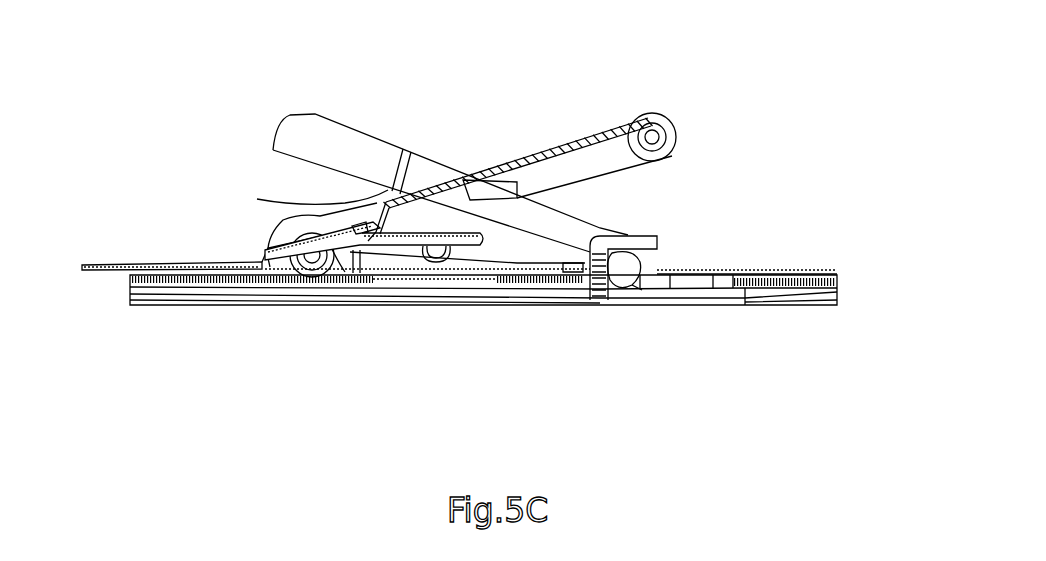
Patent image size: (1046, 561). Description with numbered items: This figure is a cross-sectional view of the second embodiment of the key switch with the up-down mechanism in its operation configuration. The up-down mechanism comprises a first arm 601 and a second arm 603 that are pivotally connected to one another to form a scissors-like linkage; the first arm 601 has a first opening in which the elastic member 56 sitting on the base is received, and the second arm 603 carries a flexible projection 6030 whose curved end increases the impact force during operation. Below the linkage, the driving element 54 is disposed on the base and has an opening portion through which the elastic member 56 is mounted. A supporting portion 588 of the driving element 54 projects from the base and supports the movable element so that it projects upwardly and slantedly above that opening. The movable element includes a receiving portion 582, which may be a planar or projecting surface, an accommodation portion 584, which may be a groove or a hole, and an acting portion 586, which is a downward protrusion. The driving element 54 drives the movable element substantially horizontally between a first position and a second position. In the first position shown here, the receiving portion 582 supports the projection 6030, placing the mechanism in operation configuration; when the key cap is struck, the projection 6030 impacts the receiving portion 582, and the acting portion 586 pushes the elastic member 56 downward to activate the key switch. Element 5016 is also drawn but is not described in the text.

The first arm 601 is at (327, 162).
The second arm 603 is at (607, 158).
The projection 6030 is at (360, 203).
The driving element 54 is at (98, 263).
The supporting portion 588 is at (262, 262).
The accommodation portion 584 is at (308, 258).
The receiving portion 582 is at (393, 248).
The elastic member 56 is at (426, 283).
The acting portion 586 is at (487, 288).
The cam 5016 is at (617, 275).